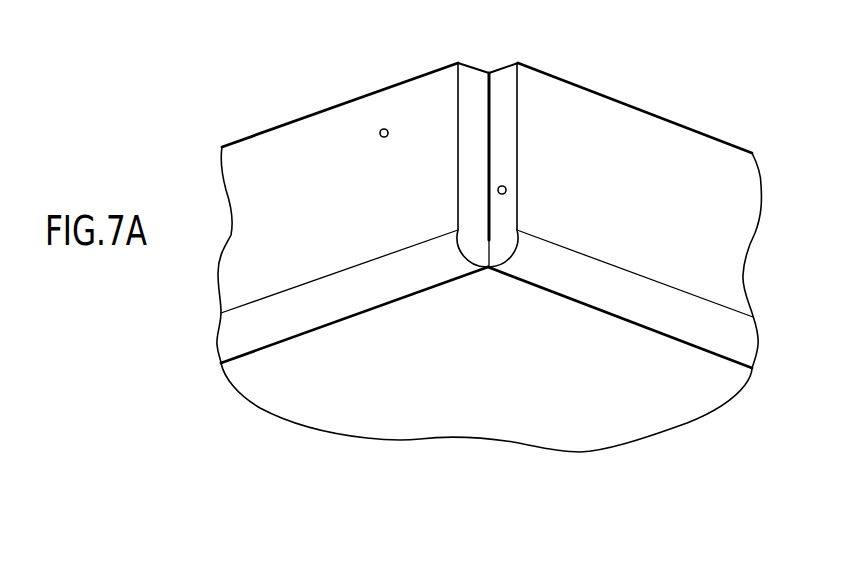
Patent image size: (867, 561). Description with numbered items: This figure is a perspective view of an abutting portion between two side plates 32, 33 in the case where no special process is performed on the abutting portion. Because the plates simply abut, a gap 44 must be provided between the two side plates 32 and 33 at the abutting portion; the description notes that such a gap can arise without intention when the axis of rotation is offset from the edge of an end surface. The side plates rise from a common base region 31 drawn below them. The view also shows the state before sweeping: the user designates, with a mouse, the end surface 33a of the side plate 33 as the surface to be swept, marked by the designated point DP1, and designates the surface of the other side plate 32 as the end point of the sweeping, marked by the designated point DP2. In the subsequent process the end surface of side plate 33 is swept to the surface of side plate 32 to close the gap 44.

The substrate 31 is at (513, 375).
The side plate 32 is at (357, 199).
The side plate 33 is at (643, 201).
The end surface 33a is at (505, 132).
The gap 44 is at (492, 72).
The designated point DP1 is at (506, 189).
The designated point DP2 is at (385, 129).